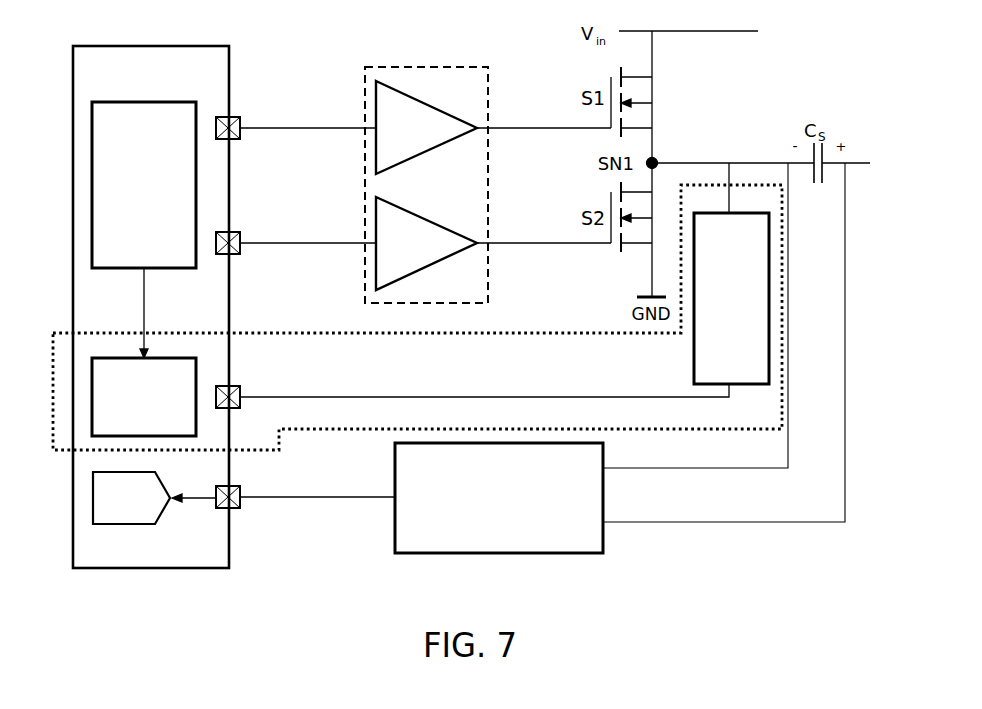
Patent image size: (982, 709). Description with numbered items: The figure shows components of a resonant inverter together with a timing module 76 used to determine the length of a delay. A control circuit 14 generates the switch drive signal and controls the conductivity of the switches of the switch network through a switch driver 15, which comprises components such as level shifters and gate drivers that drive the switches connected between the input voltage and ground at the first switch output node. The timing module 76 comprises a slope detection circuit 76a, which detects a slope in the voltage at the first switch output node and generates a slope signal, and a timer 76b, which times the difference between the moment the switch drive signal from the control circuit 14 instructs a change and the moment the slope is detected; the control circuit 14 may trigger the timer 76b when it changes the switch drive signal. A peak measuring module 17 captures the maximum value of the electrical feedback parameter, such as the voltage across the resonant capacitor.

The control circuit 14 is at (144, 185).
The switch driver 15 is at (434, 65).
The peak measuring module 17 is at (348, 498).
The timing module 76 is at (541, 333).
The slope detection circuit 76a is at (731, 298).
The timer 76b is at (144, 397).